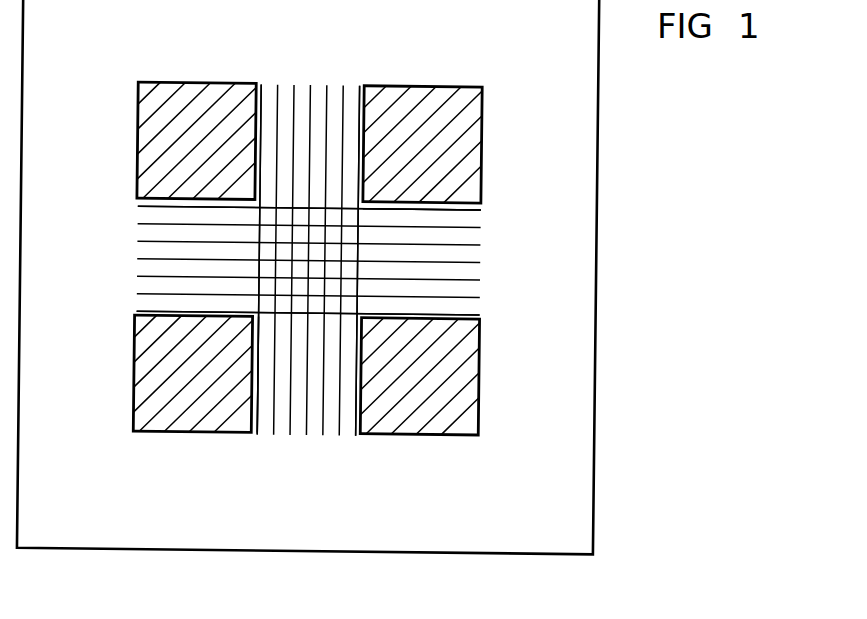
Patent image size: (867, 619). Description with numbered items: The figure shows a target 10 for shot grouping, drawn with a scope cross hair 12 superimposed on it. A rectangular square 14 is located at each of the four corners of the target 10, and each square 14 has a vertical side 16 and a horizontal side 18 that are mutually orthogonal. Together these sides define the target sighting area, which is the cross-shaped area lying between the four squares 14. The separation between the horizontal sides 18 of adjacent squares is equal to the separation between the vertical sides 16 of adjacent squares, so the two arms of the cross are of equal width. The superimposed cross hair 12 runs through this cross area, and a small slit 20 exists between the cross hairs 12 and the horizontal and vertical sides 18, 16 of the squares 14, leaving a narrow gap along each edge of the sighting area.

The target 10 is at (604, 294).
The scope cross hair 12 is at (307, 105).
The rectangular square 14 is at (208, 97).
The vertical side 16 is at (258, 90).
The horizontal side 18 is at (157, 202).
The small slit 20 is at (478, 211).